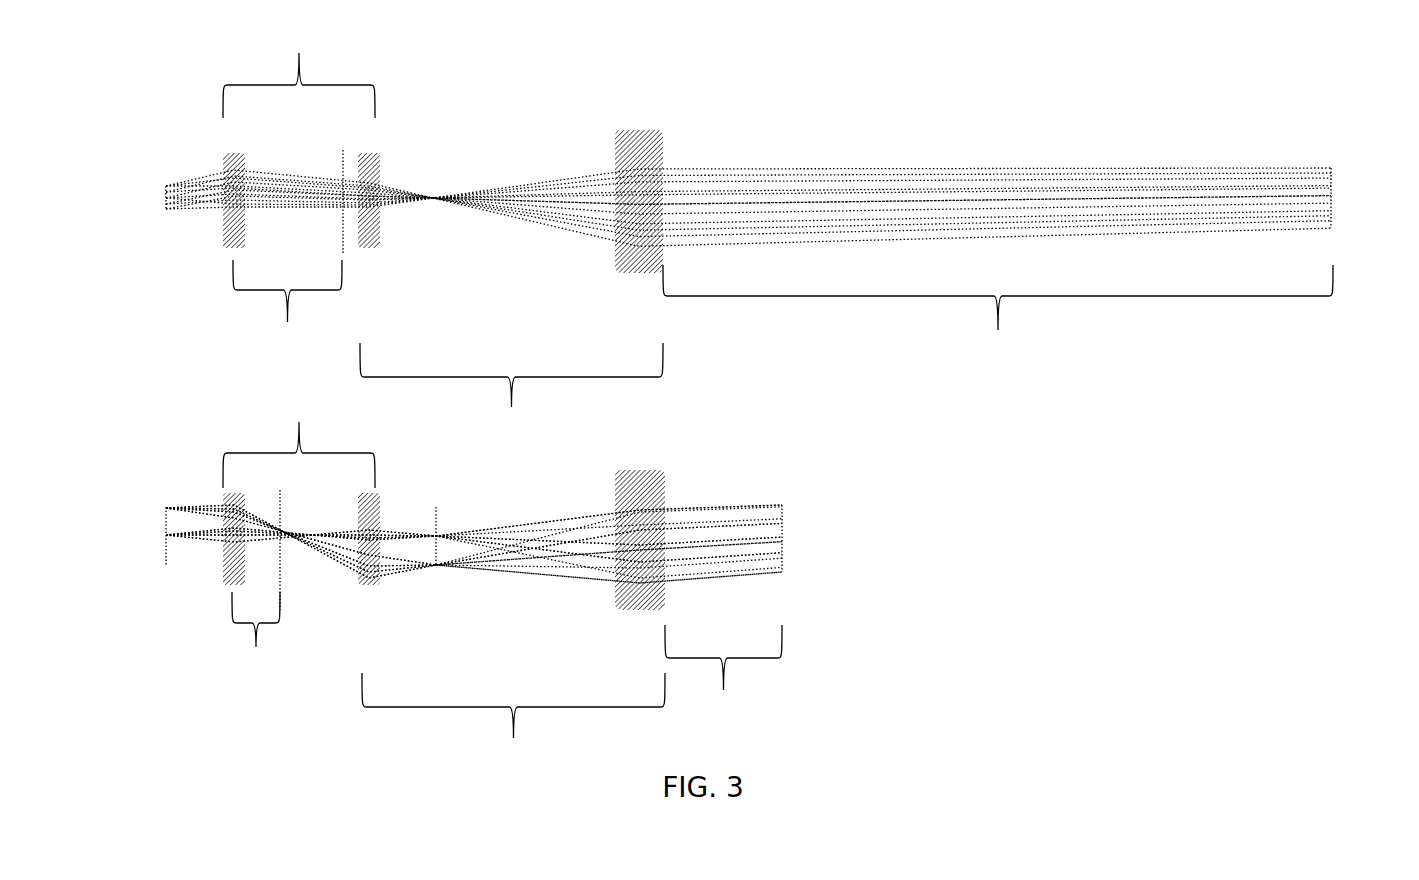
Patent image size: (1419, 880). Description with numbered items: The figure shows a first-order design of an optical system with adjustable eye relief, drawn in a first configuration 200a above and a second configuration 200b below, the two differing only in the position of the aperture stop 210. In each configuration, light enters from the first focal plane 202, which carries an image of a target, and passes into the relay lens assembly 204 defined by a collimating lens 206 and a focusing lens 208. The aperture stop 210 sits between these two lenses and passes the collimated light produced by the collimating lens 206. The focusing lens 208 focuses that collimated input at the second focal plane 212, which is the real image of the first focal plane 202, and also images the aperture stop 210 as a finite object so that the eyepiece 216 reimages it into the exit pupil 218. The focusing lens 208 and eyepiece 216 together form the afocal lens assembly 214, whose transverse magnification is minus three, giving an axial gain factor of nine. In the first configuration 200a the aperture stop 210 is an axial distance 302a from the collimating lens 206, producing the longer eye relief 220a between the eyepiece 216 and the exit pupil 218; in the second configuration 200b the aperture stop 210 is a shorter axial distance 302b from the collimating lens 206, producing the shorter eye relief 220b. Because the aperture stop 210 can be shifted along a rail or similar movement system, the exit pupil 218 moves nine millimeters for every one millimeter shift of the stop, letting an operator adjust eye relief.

The first configuration 200a is at (80, 127).
The second configuration 200b is at (91, 485).
The first focal plane 202 is at (165, 197).
The relay lens assembly 204 is at (299, 255).
The collimating lens 206 is at (228, 250).
The focusing lens 208 is at (378, 216).
The aperture stop 210 is at (344, 232).
The second focal plane 212 is at (437, 196).
The afocal lens assembly 214 is at (512, 557).
The eyepiece 216 is at (640, 130).
The exit pupil 218 is at (1334, 197).
The eye relief distance in first configuration 220a is at (998, 317).
The eye relief distance in second configuration 220b is at (723, 673).
The axial distance in first configuration 302a is at (287, 306).
The axial distance in second configuration 302b is at (257, 643).